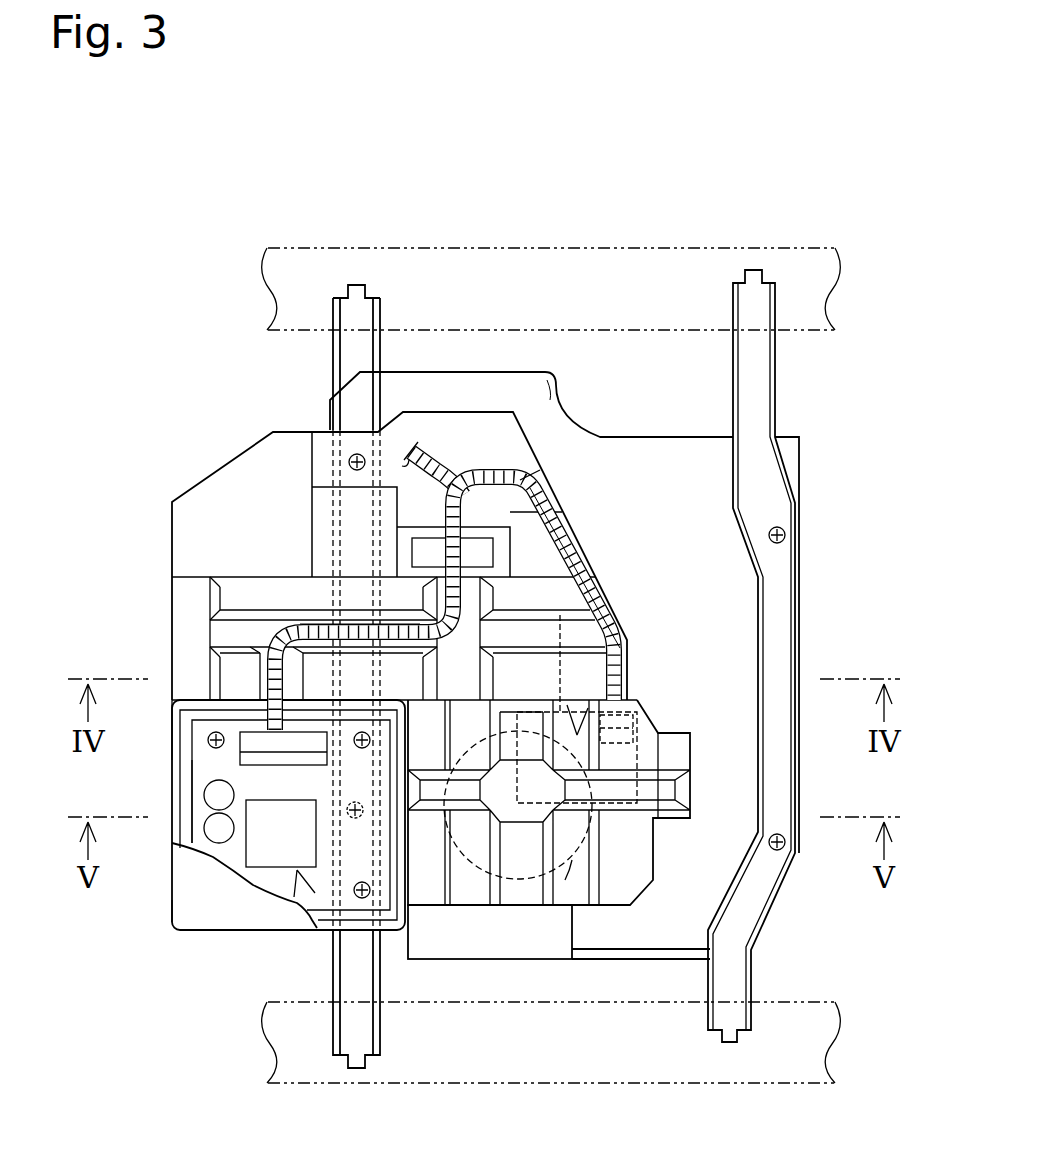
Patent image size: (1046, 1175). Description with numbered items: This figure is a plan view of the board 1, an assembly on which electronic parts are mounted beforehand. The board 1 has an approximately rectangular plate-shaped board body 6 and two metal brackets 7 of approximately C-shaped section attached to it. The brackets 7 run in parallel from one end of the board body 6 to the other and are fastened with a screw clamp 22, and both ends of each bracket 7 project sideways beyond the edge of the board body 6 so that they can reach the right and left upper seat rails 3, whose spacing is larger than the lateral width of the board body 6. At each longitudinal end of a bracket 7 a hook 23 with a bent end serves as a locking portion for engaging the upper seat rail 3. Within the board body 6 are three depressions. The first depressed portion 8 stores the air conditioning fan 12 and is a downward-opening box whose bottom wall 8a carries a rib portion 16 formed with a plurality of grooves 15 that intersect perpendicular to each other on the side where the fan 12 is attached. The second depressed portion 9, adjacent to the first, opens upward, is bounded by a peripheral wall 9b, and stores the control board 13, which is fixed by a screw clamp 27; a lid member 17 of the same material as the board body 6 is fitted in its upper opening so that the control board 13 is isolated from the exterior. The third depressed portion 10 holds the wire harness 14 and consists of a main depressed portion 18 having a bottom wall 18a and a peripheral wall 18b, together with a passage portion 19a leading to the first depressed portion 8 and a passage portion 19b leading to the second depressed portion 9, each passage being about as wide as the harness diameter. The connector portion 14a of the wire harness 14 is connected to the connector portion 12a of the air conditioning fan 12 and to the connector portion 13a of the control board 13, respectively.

The board 1 is at (184, 396).
The upper seat rail 3 is at (552, 1068).
The board body 6 is at (193, 493).
The metal bracket 7 is at (776, 352).
The first depressed portion 8 is at (532, 862).
The bottom wall 8a is at (427, 888).
The second depressed portion 9 is at (300, 872).
The peripheral wall 9b is at (176, 723).
The third depressed portion 10 is at (545, 396).
The air conditioning fan 12 is at (572, 862).
The connector portion 12a is at (640, 735).
The control board 13 is at (268, 882).
The connector portion 13a is at (255, 760).
The wire harness 14 is at (381, 532).
The connector portion 14a is at (637, 740).
The groove 15 is at (650, 790).
The rib portion 16 is at (580, 722).
The lid member 17 is at (190, 925).
The main depressed portion 18 is at (462, 443).
The bottom wall 18a is at (414, 445).
The peripheral wall 18b is at (530, 445).
The passage portion 19a is at (575, 535).
The passage portion 19b is at (290, 625).
The screw clamp 22 is at (812, 873).
The hook 23 is at (732, 1043).
The screw clamp 27 is at (362, 898).